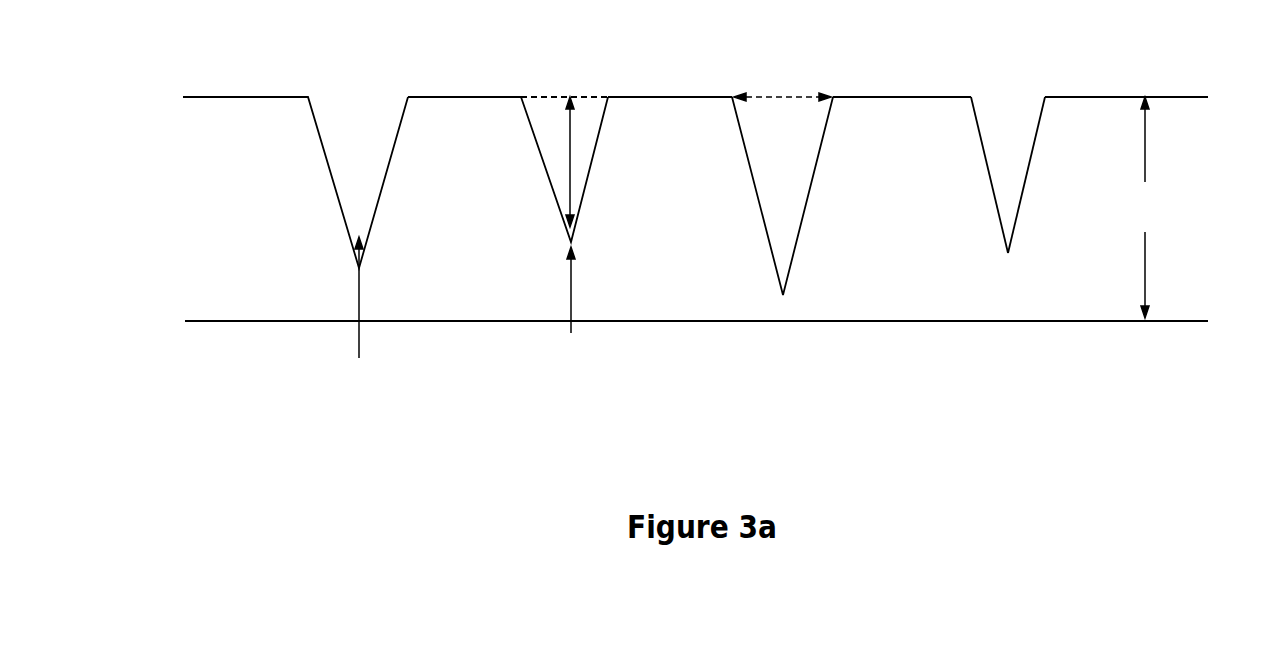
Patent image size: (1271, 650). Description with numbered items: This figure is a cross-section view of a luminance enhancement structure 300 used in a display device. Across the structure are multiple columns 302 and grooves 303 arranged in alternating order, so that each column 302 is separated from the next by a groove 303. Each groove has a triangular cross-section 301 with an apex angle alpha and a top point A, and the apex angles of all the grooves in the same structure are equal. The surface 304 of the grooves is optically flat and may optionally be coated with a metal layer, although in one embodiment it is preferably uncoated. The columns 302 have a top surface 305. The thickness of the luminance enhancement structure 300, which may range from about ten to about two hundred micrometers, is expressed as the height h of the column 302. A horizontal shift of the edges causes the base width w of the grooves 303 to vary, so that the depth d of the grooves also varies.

The luminance enhancement structure 300 is at (669, 245).
The triangular cross-section 301 is at (771, 182).
The column 302 is at (658, 133).
The groove 303 is at (1007, 203).
The surface of the grooves 304 is at (976, 106).
The top surface 305 is at (457, 87).